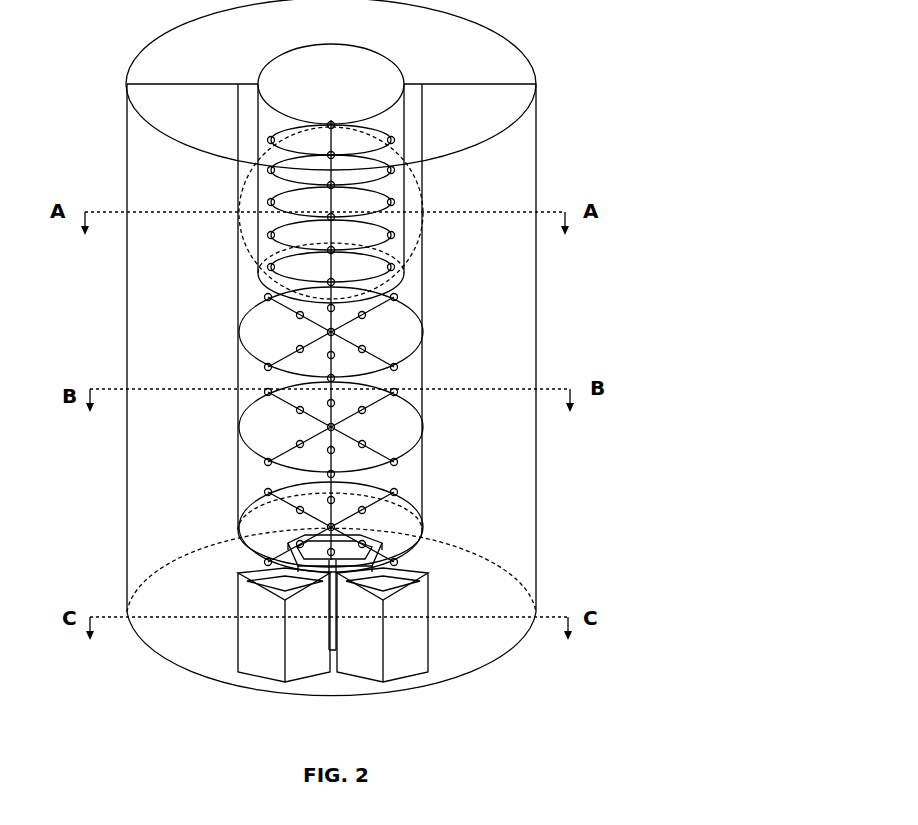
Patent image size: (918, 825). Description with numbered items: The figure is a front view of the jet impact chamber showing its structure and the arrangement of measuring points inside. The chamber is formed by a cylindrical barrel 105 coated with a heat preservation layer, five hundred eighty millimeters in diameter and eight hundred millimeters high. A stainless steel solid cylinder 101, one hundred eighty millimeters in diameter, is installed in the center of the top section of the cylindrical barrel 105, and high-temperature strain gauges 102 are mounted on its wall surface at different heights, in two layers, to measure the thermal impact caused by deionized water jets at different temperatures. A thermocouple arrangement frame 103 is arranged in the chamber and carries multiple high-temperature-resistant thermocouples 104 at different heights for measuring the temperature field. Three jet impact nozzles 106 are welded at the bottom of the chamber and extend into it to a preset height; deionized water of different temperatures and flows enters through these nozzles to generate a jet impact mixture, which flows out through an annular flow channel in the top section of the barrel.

The solid cylinder 101 is at (325, 78).
The high-temperature strain gauges 102 is at (420, 165).
The thermocouple arrangement frame 103 is at (422, 290).
The high-temperature-resistant thermocouples 104 is at (358, 347).
The cylindrical barrel 105 is at (537, 457).
The jet impact nozzles 106 is at (382, 582).